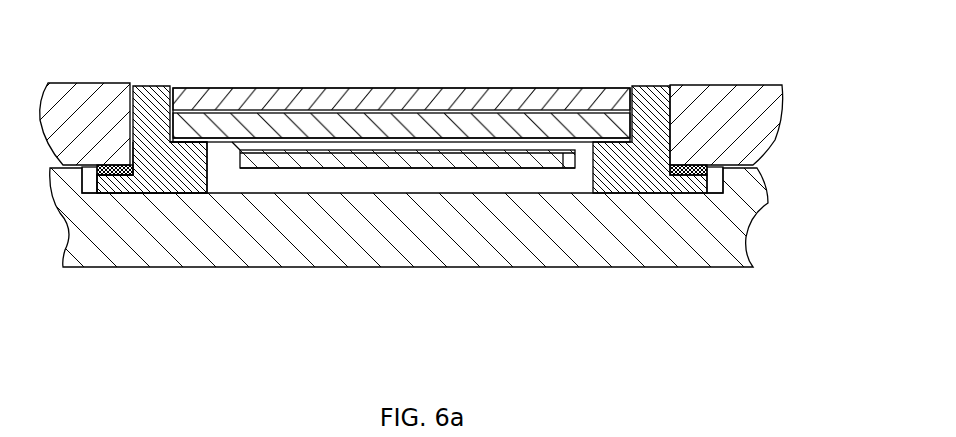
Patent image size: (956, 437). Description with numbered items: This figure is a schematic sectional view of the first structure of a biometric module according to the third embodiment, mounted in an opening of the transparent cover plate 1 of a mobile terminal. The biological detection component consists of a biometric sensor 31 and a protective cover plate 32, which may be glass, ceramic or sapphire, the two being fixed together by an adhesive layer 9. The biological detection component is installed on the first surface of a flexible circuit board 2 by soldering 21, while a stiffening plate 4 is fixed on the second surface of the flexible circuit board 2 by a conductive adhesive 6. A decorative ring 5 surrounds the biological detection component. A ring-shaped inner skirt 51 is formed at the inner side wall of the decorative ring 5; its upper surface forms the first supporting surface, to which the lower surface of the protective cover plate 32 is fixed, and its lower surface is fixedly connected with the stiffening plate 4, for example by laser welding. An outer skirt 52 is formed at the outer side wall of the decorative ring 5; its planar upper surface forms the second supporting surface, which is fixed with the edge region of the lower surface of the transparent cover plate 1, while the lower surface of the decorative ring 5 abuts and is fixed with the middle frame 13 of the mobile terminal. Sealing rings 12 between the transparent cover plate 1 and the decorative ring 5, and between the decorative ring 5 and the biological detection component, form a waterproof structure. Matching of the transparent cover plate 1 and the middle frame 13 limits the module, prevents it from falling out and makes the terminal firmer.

The transparent cover plate 1 is at (102, 83).
The flexible circuit board 2 is at (232, 145).
The stiffening plate 4 is at (497, 160).
The decorative ring 5 is at (645, 177).
The inner skirt 51 is at (188, 173).
The outer skirt 52 is at (120, 172).
The conductive adhesive 6 is at (390, 168).
The adhesive layer 9 is at (407, 88).
The sealing ring 12 is at (92, 172).
The middle frame 13 is at (770, 205).
The soldering 21 is at (313, 165).
The biometric sensor 31 is at (505, 88).
The protective cover plate 32 is at (288, 88).